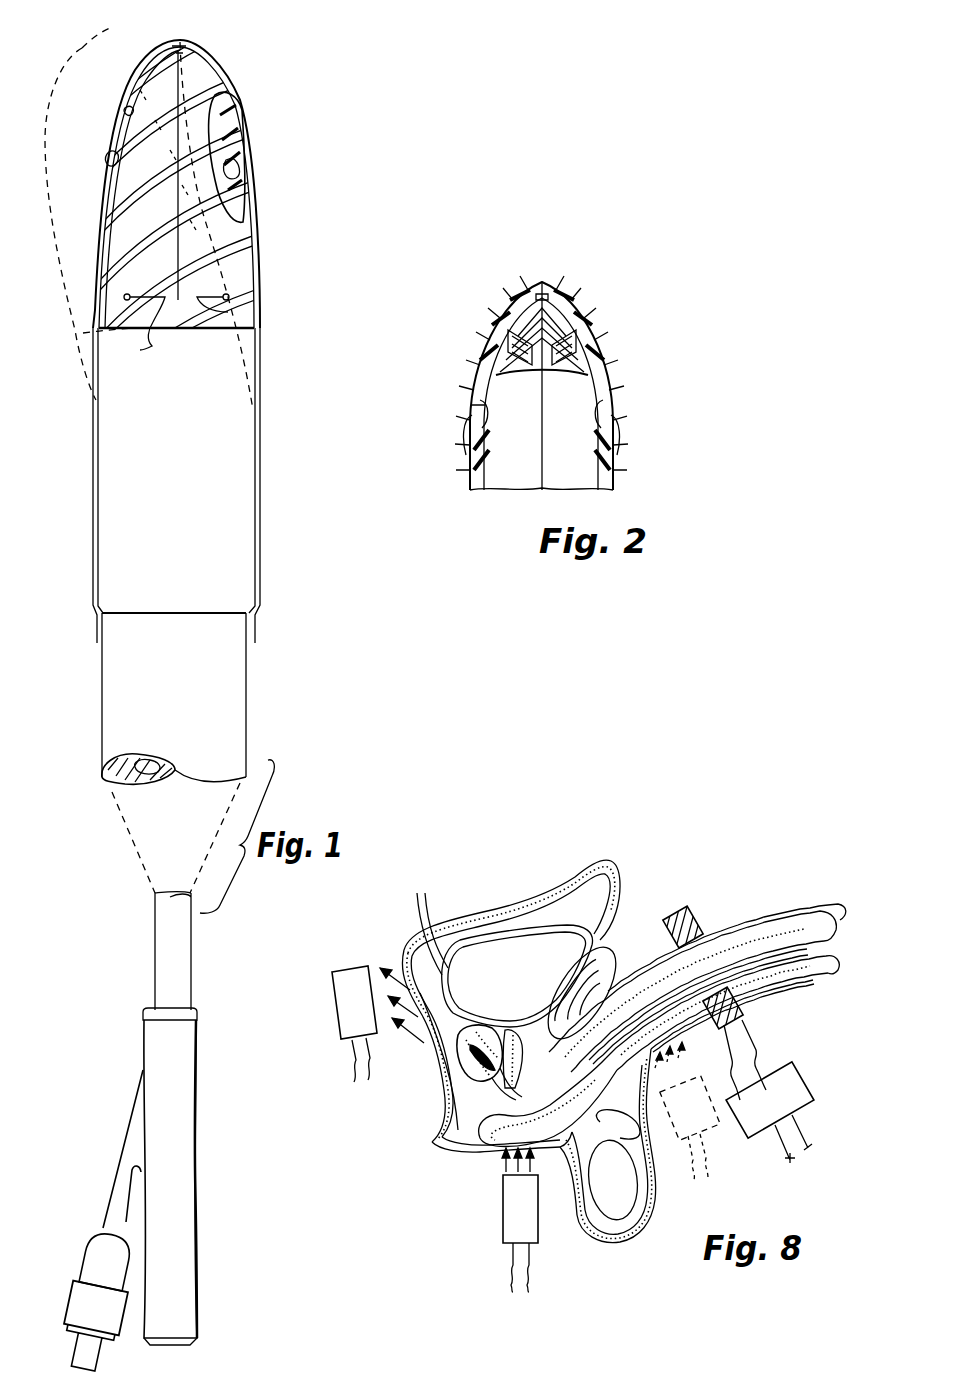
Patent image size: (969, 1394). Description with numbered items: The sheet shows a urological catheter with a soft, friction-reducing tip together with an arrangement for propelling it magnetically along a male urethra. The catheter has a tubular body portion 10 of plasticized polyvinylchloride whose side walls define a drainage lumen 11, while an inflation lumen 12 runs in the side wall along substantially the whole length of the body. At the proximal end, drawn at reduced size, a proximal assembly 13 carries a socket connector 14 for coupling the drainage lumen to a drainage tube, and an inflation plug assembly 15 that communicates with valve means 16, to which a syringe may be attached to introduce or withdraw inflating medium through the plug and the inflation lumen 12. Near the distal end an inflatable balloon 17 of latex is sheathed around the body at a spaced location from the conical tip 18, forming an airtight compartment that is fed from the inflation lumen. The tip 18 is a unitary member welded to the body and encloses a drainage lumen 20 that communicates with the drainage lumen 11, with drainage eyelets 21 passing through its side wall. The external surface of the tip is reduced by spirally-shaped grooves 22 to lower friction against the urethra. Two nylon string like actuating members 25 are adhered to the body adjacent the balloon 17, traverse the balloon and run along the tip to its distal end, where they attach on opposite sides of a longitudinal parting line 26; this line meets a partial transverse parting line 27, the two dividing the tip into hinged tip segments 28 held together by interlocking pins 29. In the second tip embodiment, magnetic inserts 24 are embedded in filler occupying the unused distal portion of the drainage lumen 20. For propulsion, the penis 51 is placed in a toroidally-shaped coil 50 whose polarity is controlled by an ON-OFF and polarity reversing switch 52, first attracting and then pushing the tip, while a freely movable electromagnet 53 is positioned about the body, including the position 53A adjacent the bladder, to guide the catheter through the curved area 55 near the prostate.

In FIG. 1, the tubular body portion 10 is at (125, 682).
In FIG. 1, the drainage lumen 11 is at (150, 776).
In FIG. 1, the inflation lumen 12 is at (105, 784).
In FIG. 1, the proximal assembly 13 is at (150, 1005).
In FIG. 1, the socket connector 14 is at (180, 1300).
In FIG. 1, the inflation plug assembly 15 is at (93, 1220).
In FIG. 1, the valve means 16 is at (78, 1300).
In FIG. 1, the inflatable balloon 17 is at (181, 466).
In FIG. 1, the conical tip 18 is at (262, 249).
In FIG. 1, the drainage lumen 20 is at (235, 125).
In FIG. 2, the drainage lumen 20 is at (531, 451).
In FIG. 1, the drainage eyelets 21 is at (245, 172).
In FIG. 2, the drainage eyelets 21 is at (480, 413).
In FIG. 1, the spirally-shaped grooves 22 is at (127, 215).
In FIG. 2, the magnetic inserts 24 is at (520, 340).
In FIG. 1, the string like actuating members 25 is at (95, 300).
In FIG. 1, the longitudinal parting line 26 is at (212, 82).
In FIG. 1, the partial transverse parting line 27 is at (131, 339).
In FIG. 1, the hinged tip segments 28 is at (130, 110).
In FIG. 1, the interlocking pins 29 is at (186, 44).
In FIG. 2, the interlocking pins 29 is at (542, 282).
In FIG. 8, the toroidally-shaped coil 50 is at (686, 910).
In FIG. 8, the penis 51 is at (733, 920).
In FIG. 8, the ON-OFF and polarity reversing switch 52 is at (790, 1088).
In FIG. 8, the electromagnet 53 is at (693, 1119).
In FIG. 8, the electromagnet position adjacent the bladder 53A is at (350, 1010).
In FIG. 8, the area in the vicinity of the prostate 55 is at (480, 1083).